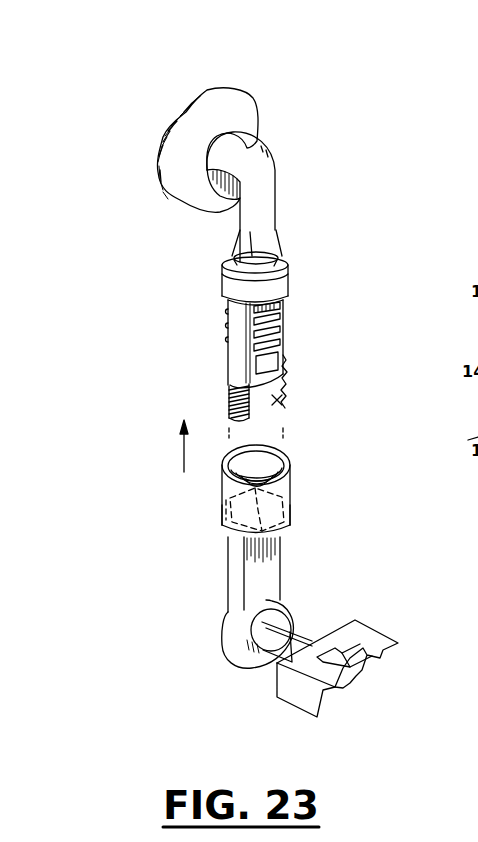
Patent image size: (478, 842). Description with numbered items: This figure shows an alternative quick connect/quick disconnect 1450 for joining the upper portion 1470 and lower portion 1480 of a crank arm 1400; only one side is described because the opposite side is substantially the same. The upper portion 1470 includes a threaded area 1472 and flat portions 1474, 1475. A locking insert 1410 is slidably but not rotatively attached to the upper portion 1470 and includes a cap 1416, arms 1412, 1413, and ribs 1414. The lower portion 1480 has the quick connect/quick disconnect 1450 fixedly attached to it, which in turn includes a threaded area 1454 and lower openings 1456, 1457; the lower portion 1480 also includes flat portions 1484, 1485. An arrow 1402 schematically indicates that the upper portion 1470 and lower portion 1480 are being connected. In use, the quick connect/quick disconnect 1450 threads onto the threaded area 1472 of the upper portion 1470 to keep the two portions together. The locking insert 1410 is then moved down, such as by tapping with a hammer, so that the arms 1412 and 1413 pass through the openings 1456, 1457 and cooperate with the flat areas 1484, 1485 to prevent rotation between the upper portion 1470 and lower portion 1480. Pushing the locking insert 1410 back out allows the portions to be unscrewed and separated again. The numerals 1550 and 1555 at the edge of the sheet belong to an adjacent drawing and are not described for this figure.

The crank arm 1400 is at (110, 97).
The arrow 1402 is at (184, 456).
The locking insert 1410 is at (290, 275).
The arm 1412 is at (284, 362).
The arm 1413 is at (228, 348).
The ribs 1414 is at (284, 316).
The cap 1416 is at (222, 281).
The quick connect/quick disconnect 1450 is at (291, 486).
The threaded area 1454 is at (290, 452).
The lower opening 1456 is at (290, 522).
The lower opening 1457 is at (238, 504).
The upper portion 1470 is at (265, 207).
The threaded area 1472 is at (286, 394).
The flat portion 1474 is at (274, 248).
The flat portion 1475 is at (226, 408).
The lower portion 1480 is at (233, 598).
The flat portion 1484 is at (263, 573).
The flat portion 1485 is at (231, 571).
The adjacent figure element 1550 is at (477, 768).
The adjacent figure element 1555 is at (459, 802).